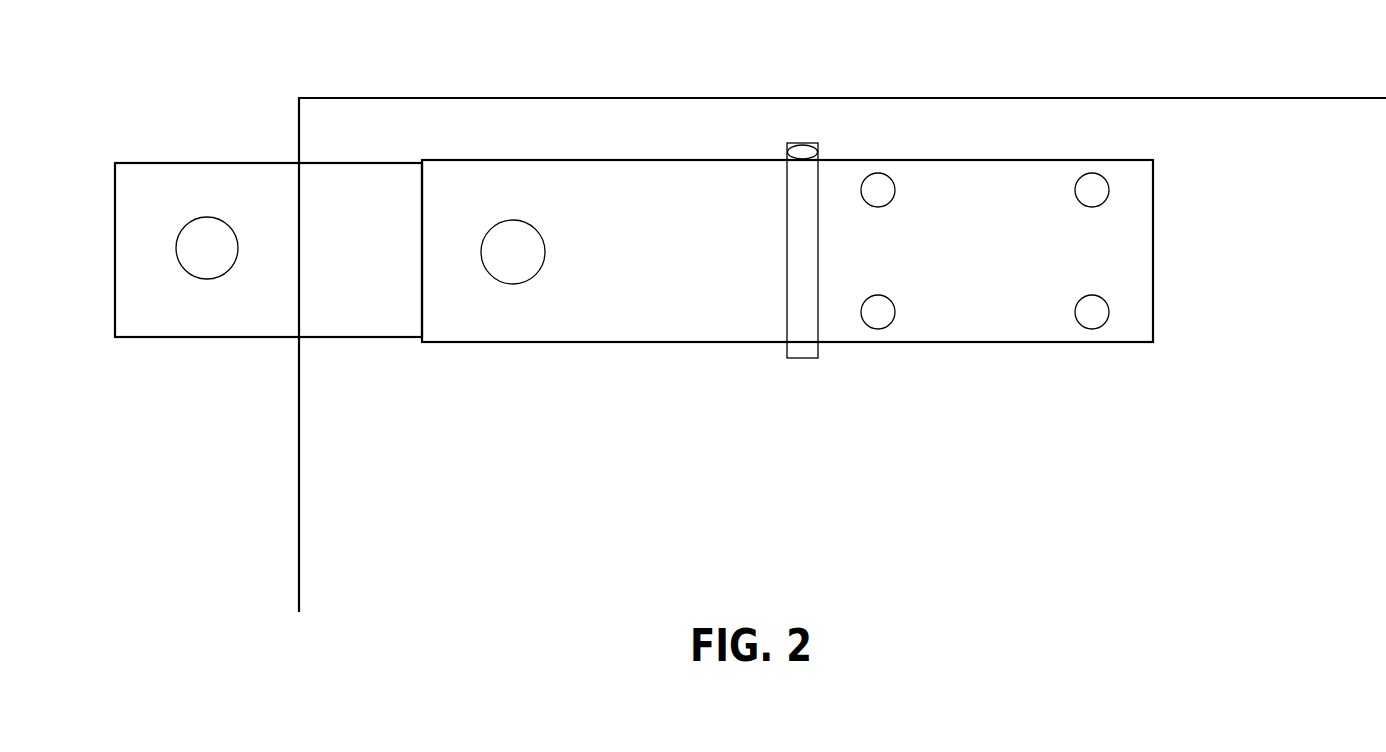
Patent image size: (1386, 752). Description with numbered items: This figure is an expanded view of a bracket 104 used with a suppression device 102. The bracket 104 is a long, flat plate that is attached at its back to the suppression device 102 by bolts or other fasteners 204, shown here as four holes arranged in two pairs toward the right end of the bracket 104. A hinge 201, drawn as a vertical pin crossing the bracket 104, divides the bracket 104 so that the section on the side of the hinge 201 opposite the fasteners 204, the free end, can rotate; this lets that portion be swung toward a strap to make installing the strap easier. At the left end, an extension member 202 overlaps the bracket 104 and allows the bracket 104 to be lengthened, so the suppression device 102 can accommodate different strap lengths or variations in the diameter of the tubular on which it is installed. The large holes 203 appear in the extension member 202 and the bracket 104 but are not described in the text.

The suppression device 102 is at (394, 464).
The bracket 104 is at (666, 226).
The hinge 201 is at (794, 124).
The extension member 202 is at (140, 187).
The large mounting holes 203 is at (246, 217).
The fasteners 204 is at (1074, 287).